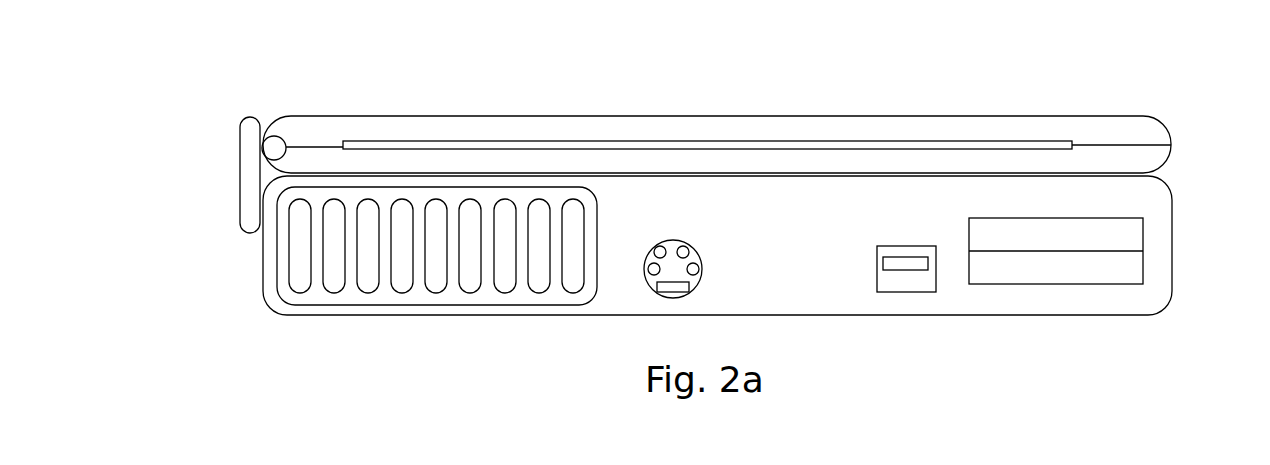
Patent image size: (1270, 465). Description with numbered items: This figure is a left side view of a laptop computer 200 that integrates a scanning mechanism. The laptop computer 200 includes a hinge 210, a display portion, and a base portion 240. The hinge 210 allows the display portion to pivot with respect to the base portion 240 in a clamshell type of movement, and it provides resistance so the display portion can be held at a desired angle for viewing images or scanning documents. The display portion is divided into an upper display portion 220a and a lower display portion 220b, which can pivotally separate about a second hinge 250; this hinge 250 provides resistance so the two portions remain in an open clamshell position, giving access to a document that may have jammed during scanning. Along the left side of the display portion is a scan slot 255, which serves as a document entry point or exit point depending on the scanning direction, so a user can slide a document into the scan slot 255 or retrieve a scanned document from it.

The laptop computer 200 is at (862, 350).
The hinge 210 is at (241, 186).
The upper display portion 220a is at (288, 120).
The lower display portion 220b is at (1136, 162).
The base portion 240 is at (597, 313).
The second hinge 250 is at (260, 148).
The scan slot 255 is at (846, 131).